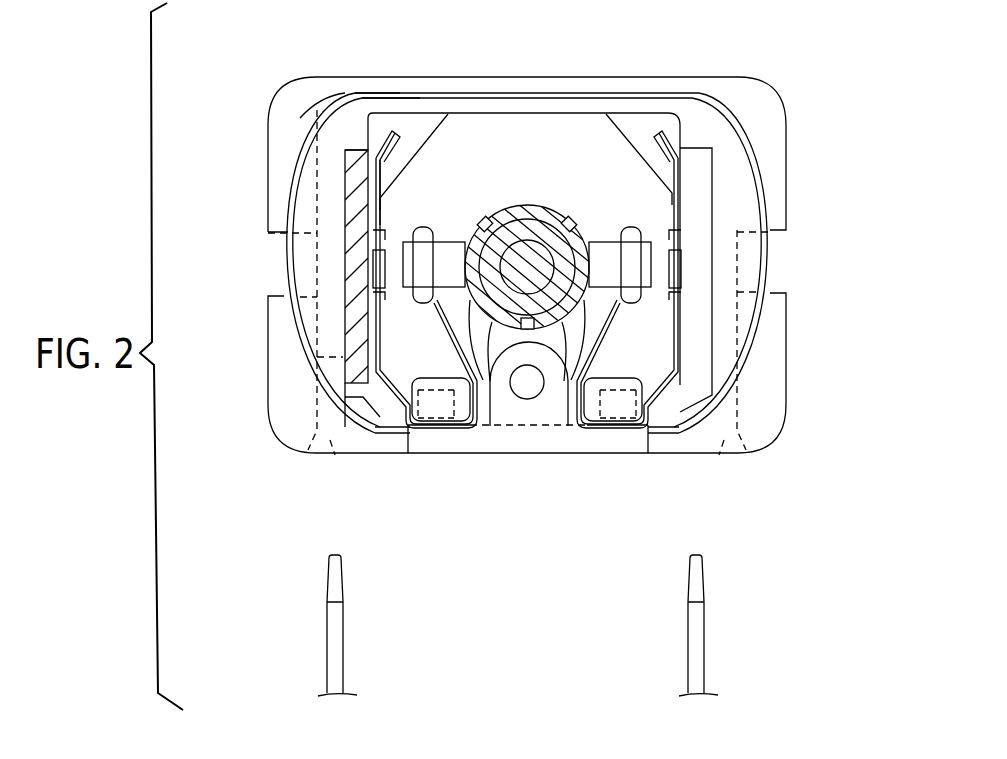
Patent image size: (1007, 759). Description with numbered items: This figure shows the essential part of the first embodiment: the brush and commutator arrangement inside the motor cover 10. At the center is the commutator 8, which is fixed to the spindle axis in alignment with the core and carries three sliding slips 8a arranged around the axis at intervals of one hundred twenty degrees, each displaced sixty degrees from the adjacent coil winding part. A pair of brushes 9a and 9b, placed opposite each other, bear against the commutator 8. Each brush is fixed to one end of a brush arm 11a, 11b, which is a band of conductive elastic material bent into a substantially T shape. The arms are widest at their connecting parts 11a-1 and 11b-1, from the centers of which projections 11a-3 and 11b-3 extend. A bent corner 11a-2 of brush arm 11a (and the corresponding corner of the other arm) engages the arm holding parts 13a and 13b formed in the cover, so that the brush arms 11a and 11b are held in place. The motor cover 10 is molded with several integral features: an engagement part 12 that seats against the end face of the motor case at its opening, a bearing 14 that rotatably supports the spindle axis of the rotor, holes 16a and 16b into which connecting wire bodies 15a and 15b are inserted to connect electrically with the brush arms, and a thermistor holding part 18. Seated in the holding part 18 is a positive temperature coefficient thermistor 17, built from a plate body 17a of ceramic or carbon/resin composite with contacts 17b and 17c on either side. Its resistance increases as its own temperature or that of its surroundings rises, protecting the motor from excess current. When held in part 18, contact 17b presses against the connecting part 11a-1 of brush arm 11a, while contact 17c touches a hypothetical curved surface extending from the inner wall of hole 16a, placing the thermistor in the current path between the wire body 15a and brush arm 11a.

The commutator 8 is at (496, 326).
The sliding slips 8a is at (477, 427).
The brush 9a is at (457, 250).
The brush 9b is at (605, 250).
The motor cover 10 is at (793, 110).
The brush arm 11a is at (383, 440).
The connecting part 11a-1 is at (378, 268).
The bent corner 11a-2 is at (382, 210).
The projection 11a-3 is at (375, 237).
The brush arm 11b is at (667, 432).
The connecting part 11b-1 is at (676, 268).
The projection 11b-3 is at (679, 235).
The engagement part 12 is at (735, 360).
The arm holding part 13a is at (432, 432).
The arm holding part 13b is at (615, 430).
The bearing 14 is at (530, 240).
The connecting wire body 15a is at (327, 651).
The connecting wire body 15b is at (695, 640).
The hole 16a is at (330, 448).
The hole 16b is at (700, 448).
The thermistor (PTC) 17 is at (342, 192).
The plate body 17a is at (360, 96).
The contact 17b is at (390, 99).
The contact 17c is at (337, 150).
The thermistor holding part 18 is at (345, 358).